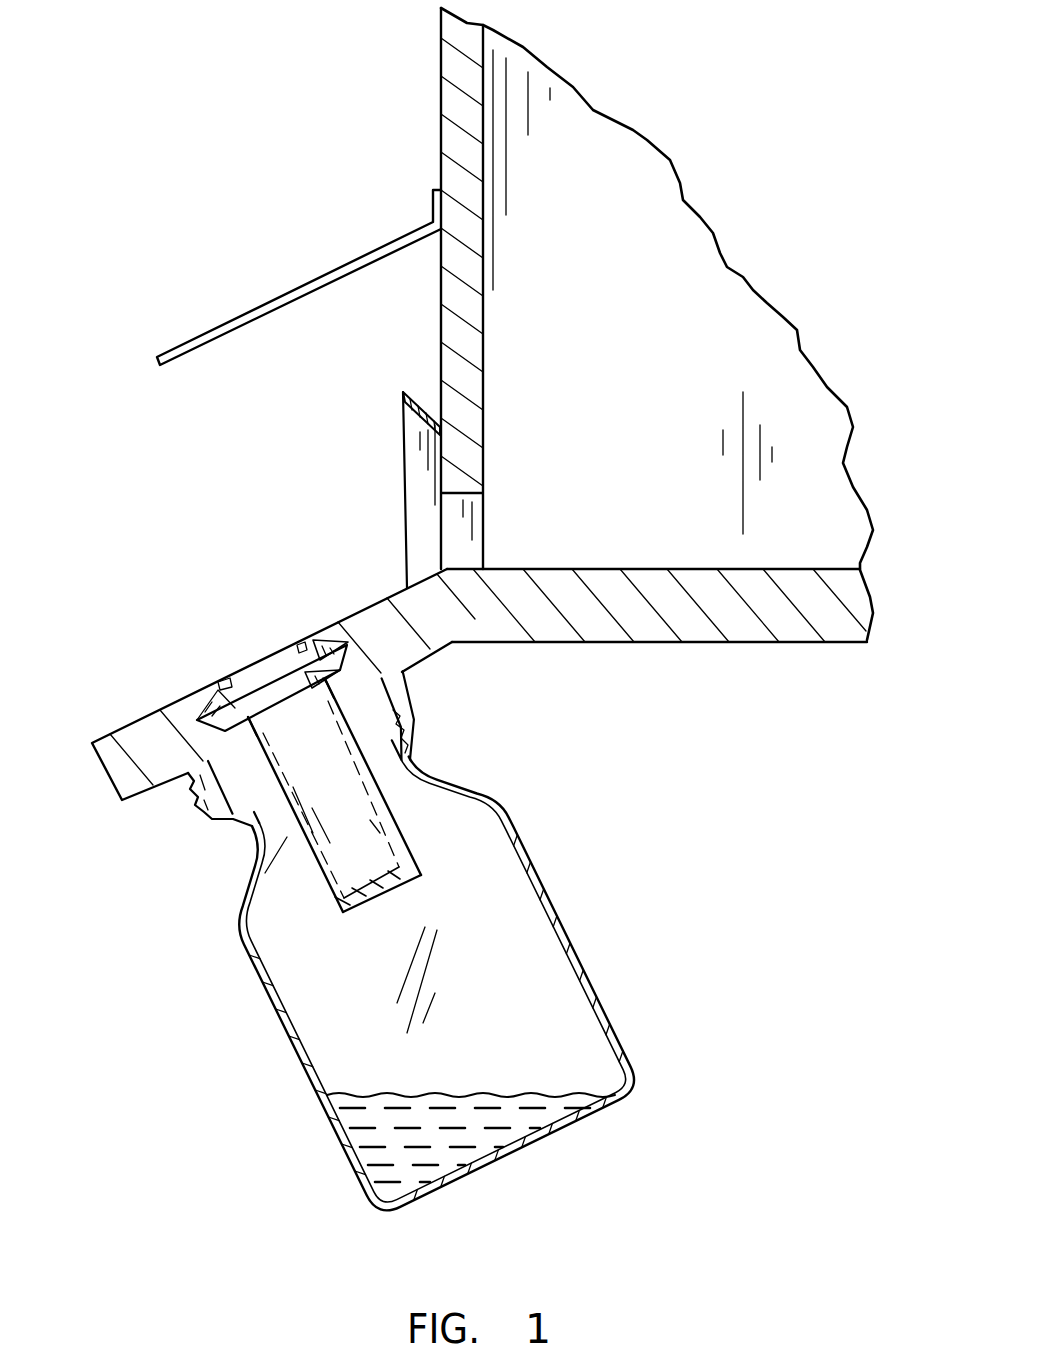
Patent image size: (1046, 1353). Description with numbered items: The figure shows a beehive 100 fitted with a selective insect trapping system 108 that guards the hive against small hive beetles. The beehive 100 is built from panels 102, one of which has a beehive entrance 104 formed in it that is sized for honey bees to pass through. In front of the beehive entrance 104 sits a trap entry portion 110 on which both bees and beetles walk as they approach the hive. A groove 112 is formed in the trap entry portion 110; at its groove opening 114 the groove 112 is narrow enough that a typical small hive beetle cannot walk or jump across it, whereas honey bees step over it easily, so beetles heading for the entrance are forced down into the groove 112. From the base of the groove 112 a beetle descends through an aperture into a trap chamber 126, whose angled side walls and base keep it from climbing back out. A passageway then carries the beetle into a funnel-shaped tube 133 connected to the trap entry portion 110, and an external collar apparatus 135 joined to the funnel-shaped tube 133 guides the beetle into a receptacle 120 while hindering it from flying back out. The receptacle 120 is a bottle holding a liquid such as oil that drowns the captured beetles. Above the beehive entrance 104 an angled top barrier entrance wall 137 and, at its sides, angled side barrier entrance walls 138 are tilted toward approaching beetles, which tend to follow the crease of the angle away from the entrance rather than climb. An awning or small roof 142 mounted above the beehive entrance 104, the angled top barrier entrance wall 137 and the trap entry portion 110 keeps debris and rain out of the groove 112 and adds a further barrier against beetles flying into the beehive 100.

The beehive 100 is at (678, 88).
The panels 102 is at (455, 66).
The beehive entrance 104 is at (445, 530).
The selective insect trapping system 108 is at (563, 828).
The trap entry portion 110 is at (118, 763).
The groove 112 is at (252, 680).
The groove opening 114 is at (250, 678).
The receptacle 120 is at (520, 985).
The trap chamber 126 is at (310, 668).
The funnel-shaped tube 133 is at (342, 795).
The external collar apparatus 135 is at (343, 897).
The angled top barrier entrance wall 137 is at (417, 398).
The angled side barrier entrance walls 138 is at (417, 453).
The awning or small roof 142 is at (277, 298).